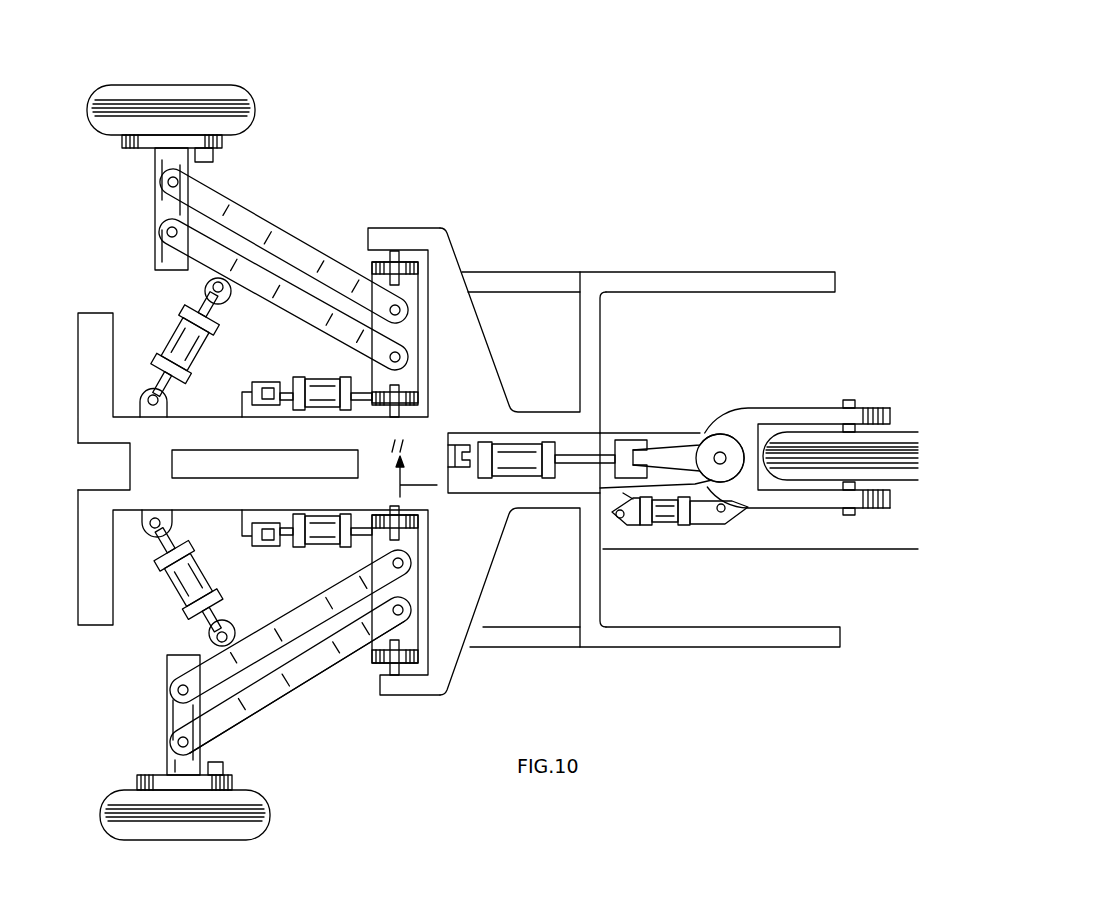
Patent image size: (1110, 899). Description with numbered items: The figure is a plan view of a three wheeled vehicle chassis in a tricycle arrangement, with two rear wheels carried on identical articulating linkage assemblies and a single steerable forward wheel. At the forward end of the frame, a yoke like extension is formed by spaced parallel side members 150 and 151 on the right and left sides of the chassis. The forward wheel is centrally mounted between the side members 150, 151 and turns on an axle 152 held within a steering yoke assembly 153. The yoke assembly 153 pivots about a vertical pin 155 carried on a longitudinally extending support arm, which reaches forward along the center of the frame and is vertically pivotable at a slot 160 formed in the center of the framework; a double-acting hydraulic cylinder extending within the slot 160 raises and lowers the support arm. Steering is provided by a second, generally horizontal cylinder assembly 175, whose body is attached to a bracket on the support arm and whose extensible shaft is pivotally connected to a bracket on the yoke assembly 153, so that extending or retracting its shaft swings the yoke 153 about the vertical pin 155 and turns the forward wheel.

The frame side member 150 is at (757, 638).
The frame side member 151 is at (773, 283).
The axle 152 is at (853, 422).
The steering yoke assembly 153 is at (770, 411).
The vertical pin 155 is at (720, 452).
The slot 160 is at (517, 436).
The steering cylinder assembly 175 is at (663, 517).